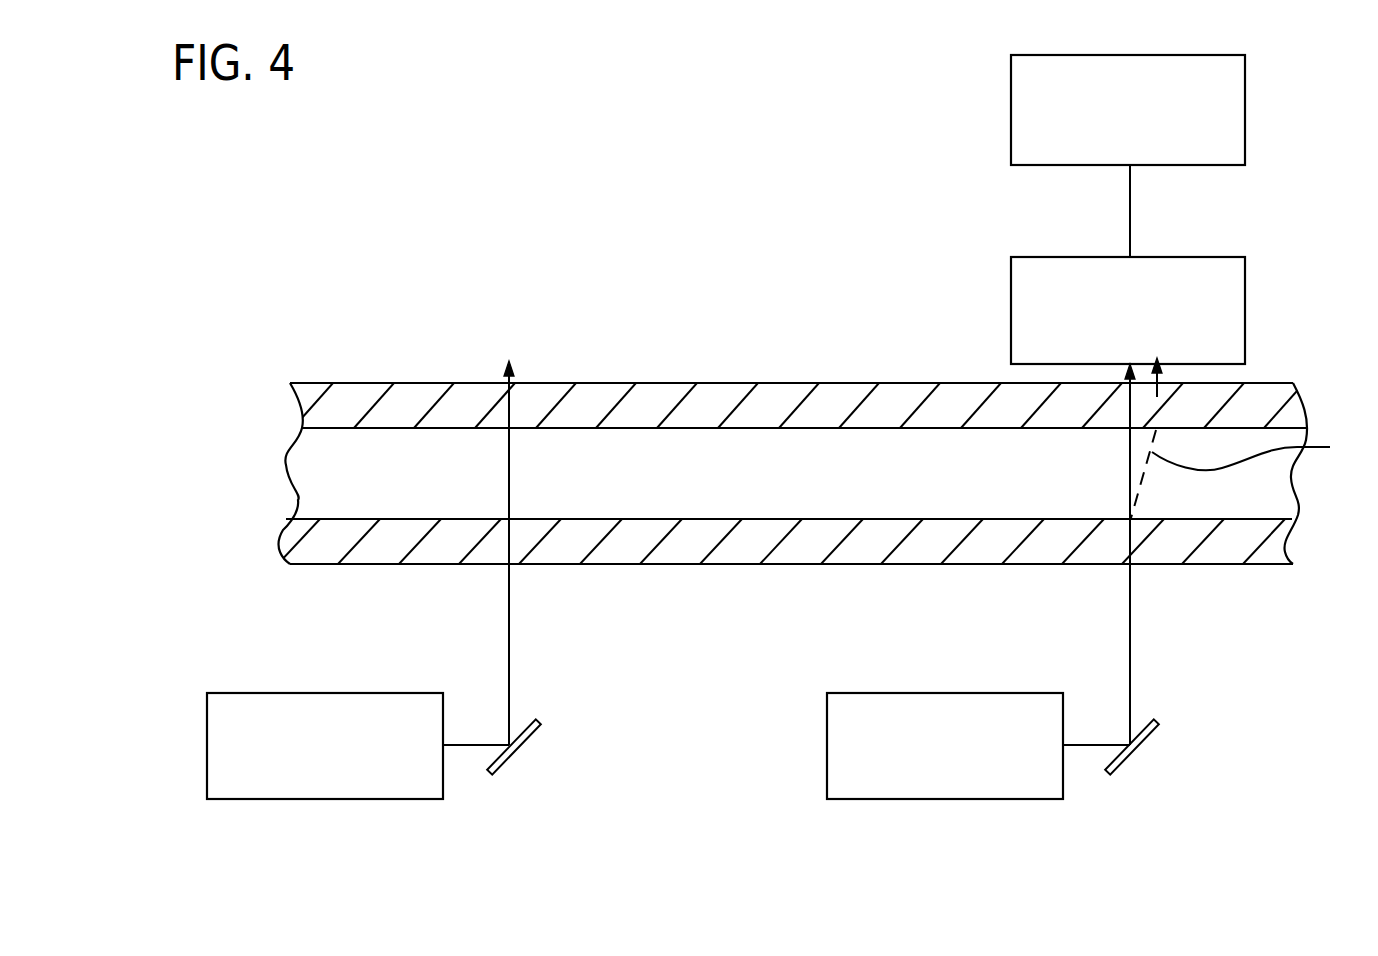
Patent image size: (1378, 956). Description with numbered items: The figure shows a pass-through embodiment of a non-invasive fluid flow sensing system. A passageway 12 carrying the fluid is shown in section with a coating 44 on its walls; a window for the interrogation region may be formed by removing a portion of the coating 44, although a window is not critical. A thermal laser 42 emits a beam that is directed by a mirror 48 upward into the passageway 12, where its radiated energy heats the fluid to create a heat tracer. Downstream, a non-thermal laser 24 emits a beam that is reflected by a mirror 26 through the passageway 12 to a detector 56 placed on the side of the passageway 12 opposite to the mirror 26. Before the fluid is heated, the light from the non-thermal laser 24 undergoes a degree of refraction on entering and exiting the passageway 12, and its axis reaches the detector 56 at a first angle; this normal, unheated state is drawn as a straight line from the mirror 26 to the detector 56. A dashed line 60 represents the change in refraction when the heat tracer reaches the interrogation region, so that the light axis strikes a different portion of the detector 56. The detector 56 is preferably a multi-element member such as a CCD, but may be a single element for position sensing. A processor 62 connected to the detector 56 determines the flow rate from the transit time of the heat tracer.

The passageway 12 is at (698, 443).
The coating 44 is at (839, 396).
The dashed line 60 is at (1243, 438).
The processor 62 is at (1245, 90).
The detector 56 is at (1245, 290).
The thermal laser 42 is at (243, 800).
The mirror 48 is at (496, 768).
The non-thermal laser 24 is at (877, 800).
The mirror 26 is at (1116, 768).